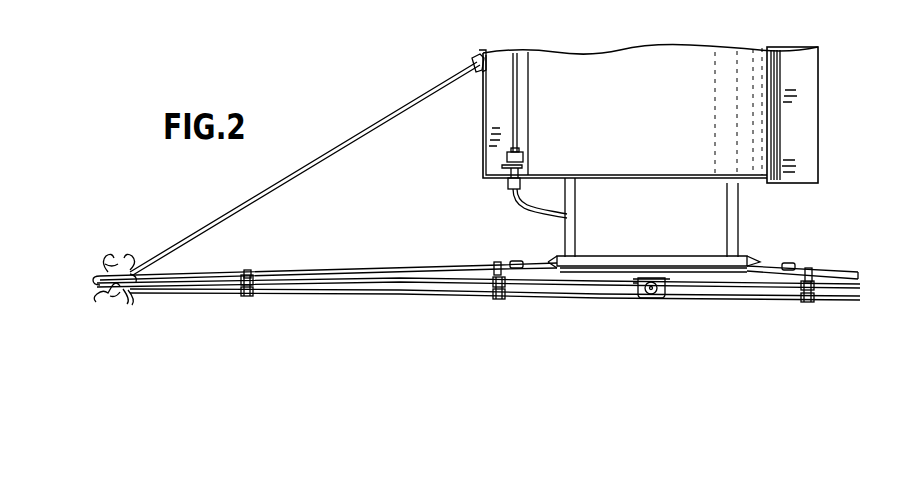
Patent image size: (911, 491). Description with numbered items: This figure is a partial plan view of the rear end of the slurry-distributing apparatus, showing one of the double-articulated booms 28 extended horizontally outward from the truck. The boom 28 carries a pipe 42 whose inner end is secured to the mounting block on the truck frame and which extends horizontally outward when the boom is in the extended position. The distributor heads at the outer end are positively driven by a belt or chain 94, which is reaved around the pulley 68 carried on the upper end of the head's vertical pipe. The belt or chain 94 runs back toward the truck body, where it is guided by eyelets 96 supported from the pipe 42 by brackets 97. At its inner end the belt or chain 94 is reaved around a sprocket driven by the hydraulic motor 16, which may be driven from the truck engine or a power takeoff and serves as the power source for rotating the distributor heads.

The hydraulic motor 16 is at (652, 300).
The double-articulated boom 28 is at (388, 252).
The pipe 42 is at (410, 270).
The pulley 68 is at (96, 296).
The belt or chain 94 is at (212, 292).
The eyelet 96 is at (250, 297).
The bracket 97 is at (248, 270).